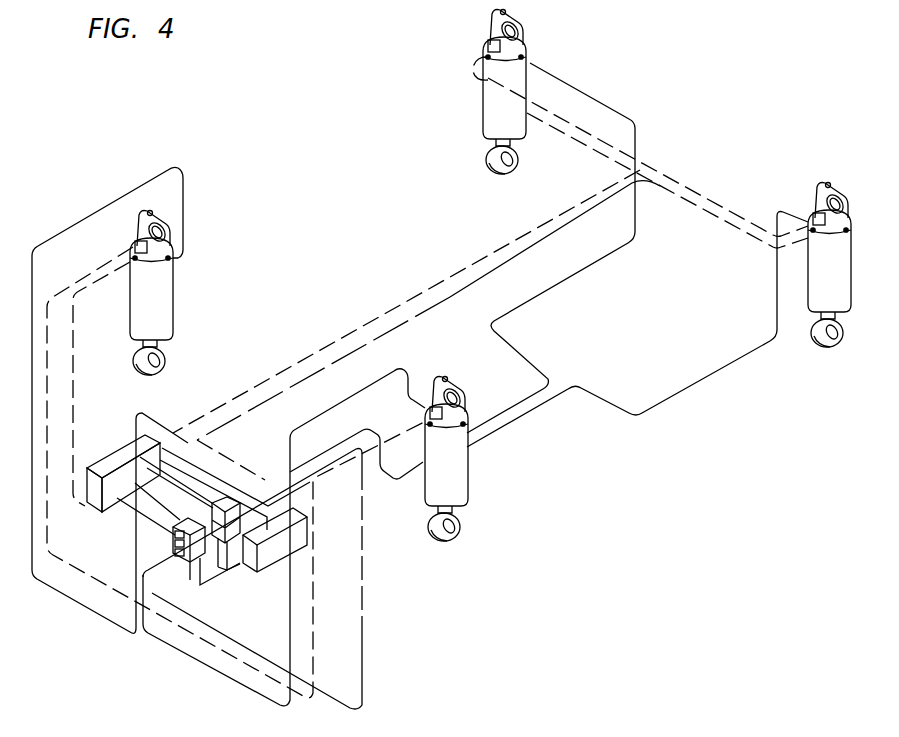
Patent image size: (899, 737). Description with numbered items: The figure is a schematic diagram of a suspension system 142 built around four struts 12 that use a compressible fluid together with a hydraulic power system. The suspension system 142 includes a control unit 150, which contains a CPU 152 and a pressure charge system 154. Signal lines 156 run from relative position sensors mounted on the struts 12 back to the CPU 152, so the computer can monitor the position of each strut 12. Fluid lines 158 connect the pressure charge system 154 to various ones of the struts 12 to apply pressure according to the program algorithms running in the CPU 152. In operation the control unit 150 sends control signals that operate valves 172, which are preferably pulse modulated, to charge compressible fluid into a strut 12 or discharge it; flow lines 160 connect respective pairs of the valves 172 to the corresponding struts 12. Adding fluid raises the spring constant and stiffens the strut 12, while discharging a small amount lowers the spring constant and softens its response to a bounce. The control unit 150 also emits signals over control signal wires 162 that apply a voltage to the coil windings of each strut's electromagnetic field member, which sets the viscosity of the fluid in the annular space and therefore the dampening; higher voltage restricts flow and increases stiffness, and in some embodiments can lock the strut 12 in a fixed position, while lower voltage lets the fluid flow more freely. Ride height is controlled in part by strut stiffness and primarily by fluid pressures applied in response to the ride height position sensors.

The strut 12 is at (170, 305).
The suspension system 142 is at (78, 200).
The control unit 150 is at (146, 641).
The CPU 152 is at (100, 460).
The pressure charge system 154 is at (267, 572).
The signal lines 156 is at (63, 287).
The fluid lines 158 is at (158, 532).
The flow lines 160 is at (572, 80).
The control signal wires 162 is at (75, 317).
The valves 172 is at (233, 497).